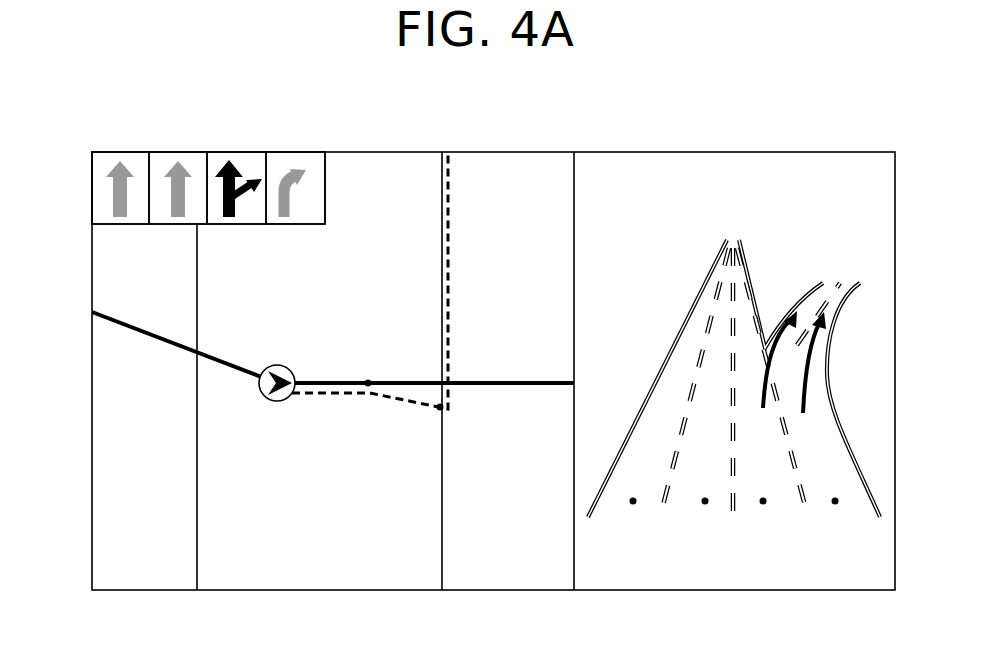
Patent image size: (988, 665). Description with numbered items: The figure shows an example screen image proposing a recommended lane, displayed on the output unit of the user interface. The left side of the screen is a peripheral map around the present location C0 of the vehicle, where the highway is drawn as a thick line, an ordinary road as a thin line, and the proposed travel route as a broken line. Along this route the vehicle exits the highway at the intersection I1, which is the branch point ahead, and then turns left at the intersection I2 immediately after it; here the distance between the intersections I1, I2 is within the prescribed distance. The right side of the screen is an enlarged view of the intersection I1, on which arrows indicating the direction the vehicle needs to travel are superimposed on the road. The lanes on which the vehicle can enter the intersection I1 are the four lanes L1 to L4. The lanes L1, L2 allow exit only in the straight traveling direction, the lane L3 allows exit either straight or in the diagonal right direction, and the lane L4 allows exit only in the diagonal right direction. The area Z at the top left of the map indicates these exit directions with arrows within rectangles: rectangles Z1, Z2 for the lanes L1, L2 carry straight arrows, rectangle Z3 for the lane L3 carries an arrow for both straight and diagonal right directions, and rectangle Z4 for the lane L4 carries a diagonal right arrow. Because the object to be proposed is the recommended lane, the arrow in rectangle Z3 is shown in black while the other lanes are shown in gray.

The area Z is at (80, 152).
The rectangle Z1 is at (118, 152).
The rectangle Z2 is at (176, 152).
The rectangle Z3 is at (240, 152).
The rectangle Z4 is at (295, 152).
The present location C0 is at (270, 397).
The intersection I1 is at (368, 383).
The intersection I2 is at (440, 407).
The lane L1 is at (633, 501).
The lane L2 is at (705, 501).
The lane L3 is at (763, 501).
The lane L4 is at (835, 501).